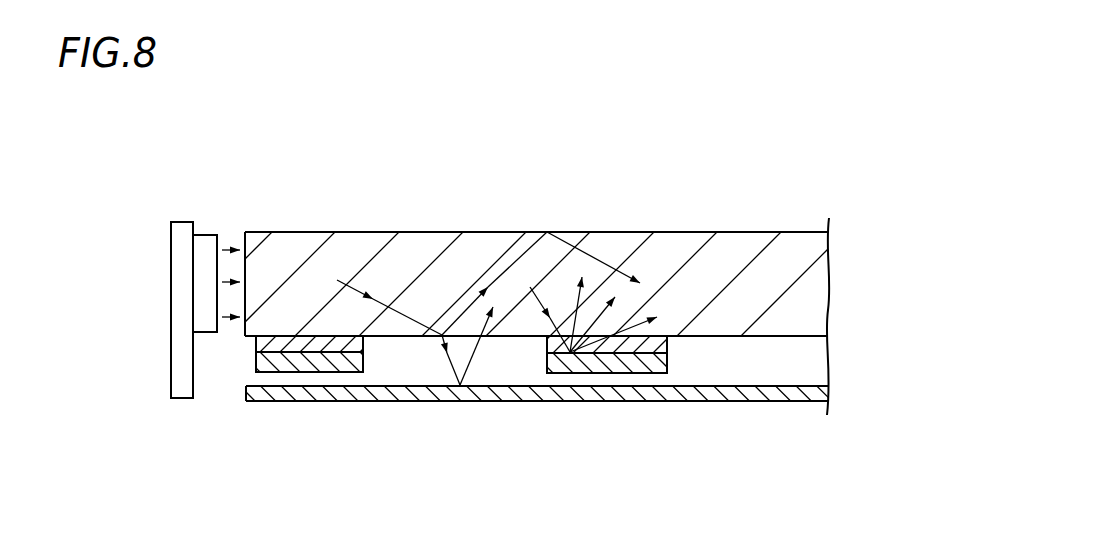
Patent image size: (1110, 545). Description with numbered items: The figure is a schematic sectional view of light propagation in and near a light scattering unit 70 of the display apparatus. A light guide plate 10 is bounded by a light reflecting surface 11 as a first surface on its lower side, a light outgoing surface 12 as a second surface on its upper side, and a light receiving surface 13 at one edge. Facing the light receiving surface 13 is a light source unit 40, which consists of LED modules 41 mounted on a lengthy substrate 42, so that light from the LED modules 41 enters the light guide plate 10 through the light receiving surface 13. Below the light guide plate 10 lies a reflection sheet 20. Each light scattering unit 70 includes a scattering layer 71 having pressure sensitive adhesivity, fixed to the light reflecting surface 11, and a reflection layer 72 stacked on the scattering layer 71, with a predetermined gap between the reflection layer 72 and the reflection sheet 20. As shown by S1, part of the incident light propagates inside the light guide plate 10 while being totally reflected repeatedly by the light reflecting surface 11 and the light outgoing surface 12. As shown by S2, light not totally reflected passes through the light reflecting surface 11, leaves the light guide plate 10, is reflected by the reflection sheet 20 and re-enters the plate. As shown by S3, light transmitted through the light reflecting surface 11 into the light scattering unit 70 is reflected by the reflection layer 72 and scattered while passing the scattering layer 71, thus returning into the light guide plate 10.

The light guide plate 10 is at (427, 242).
The light reflecting surface 11 is at (503, 337).
The light outgoing surface 12 is at (683, 232).
The light receiving surface 13 is at (244, 243).
The reflection sheet 20 is at (373, 395).
The light source unit 40 is at (190, 249).
The LED modules 41 is at (206, 240).
The substrate 42 is at (183, 227).
The light scattering unit 70 is at (457, 423).
The scattering layer 71 is at (257, 343).
The reflection layer 72 is at (257, 367).
The light propagating by total reflection S1 is at (419, 322).
The light transmitted through the light reflecting surface and reflected by the refl S2 is at (454, 383).
The light incident on the light scattering unit S3 is at (549, 310).